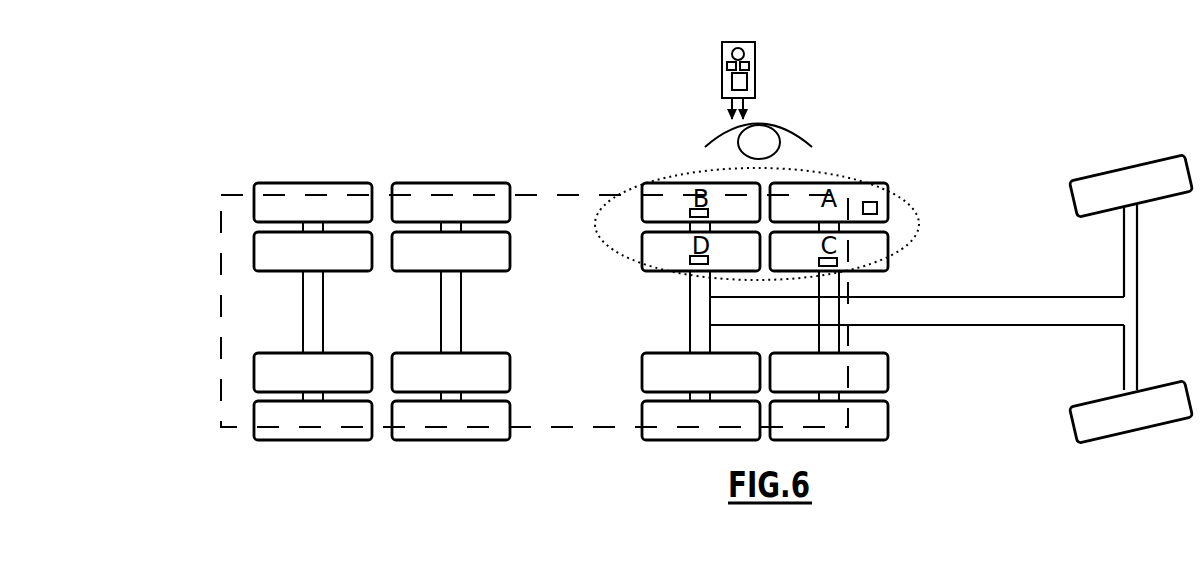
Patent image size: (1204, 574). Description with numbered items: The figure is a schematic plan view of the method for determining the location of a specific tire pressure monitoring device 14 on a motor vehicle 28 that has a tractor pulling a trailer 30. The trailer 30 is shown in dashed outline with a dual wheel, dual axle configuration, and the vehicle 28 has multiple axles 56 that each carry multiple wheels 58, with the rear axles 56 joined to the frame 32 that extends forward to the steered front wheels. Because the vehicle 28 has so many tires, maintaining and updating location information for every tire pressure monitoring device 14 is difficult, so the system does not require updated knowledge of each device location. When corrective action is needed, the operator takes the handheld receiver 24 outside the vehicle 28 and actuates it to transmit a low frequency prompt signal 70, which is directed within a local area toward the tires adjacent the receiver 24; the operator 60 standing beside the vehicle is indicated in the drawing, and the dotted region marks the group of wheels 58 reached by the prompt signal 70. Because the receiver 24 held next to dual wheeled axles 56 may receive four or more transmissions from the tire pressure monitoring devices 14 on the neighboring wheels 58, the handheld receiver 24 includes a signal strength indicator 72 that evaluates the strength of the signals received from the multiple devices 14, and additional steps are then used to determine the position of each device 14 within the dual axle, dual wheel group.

The tire pressure monitoring device 14 is at (690, 213).
The handheld receiver 24 is at (753, 60).
The motor vehicle 28 is at (506, 498).
The trailer 30 is at (590, 412).
The frame 32 is at (1015, 325).
The axle 56 is at (318, 317).
The wheel 58 is at (528, 268).
The operator eye 60 is at (781, 123).
The prompt signal 70 is at (718, 110).
The signal strength indicator 72 is at (747, 82).